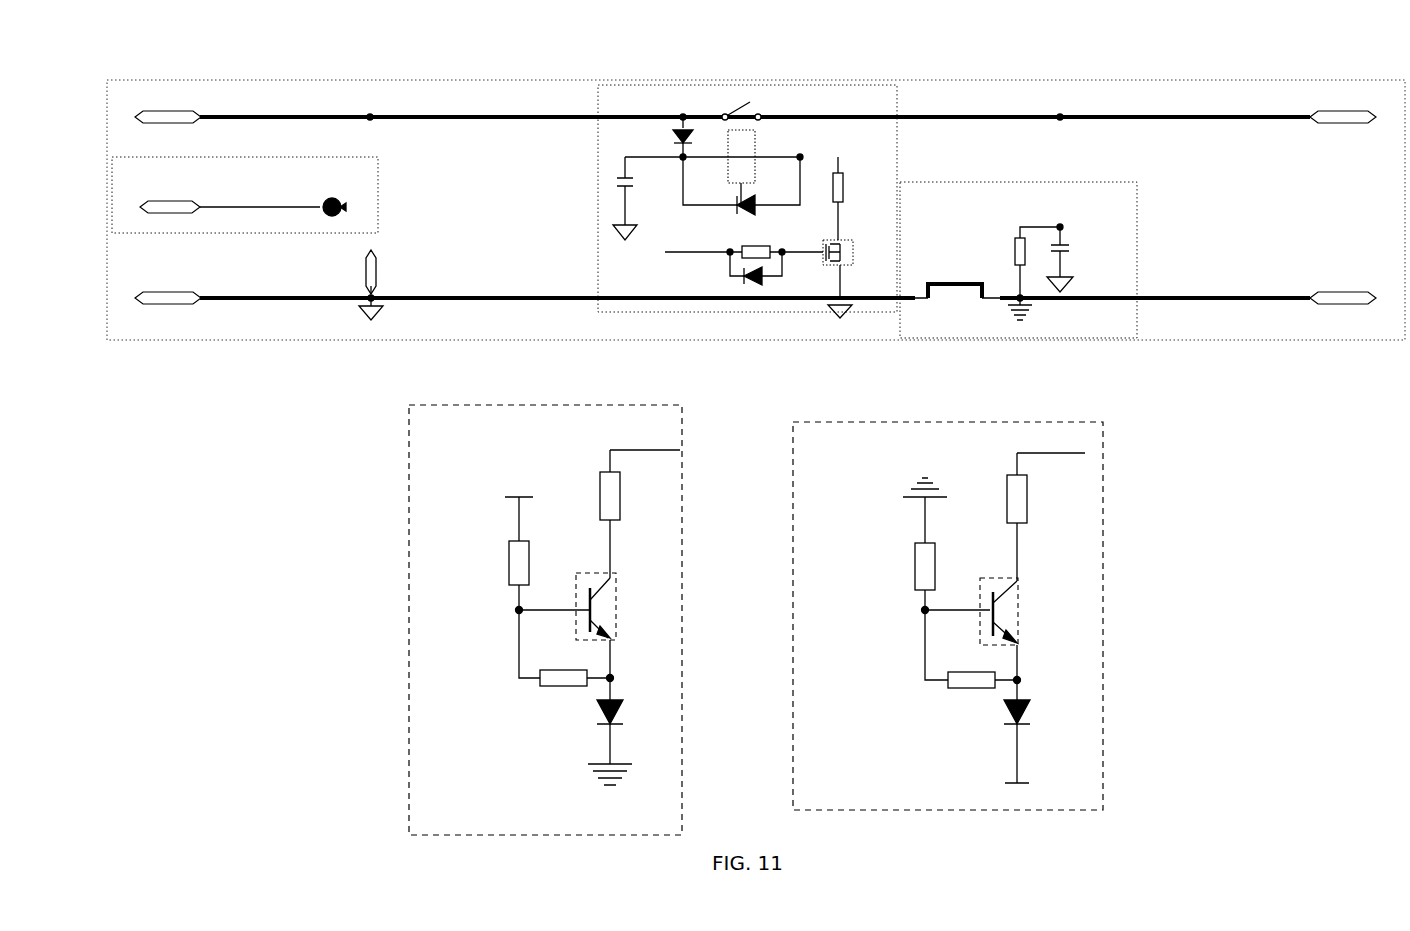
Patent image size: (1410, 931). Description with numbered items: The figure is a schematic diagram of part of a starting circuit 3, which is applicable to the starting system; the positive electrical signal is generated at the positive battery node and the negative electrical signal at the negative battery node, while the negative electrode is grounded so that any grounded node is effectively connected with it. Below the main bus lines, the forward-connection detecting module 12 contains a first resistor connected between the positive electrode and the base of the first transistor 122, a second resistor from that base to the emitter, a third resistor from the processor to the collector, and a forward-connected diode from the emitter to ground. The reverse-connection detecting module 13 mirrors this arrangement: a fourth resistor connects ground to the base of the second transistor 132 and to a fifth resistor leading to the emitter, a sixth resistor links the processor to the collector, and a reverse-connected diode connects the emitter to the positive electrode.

The starting circuit 3 is at (742, 46).
The forward-connection detecting module 12 is at (504, 405).
The first transistor 122 is at (612, 582).
The reverse-connection detecting module 13 is at (868, 422).
The second transistor 132 is at (1018, 586).